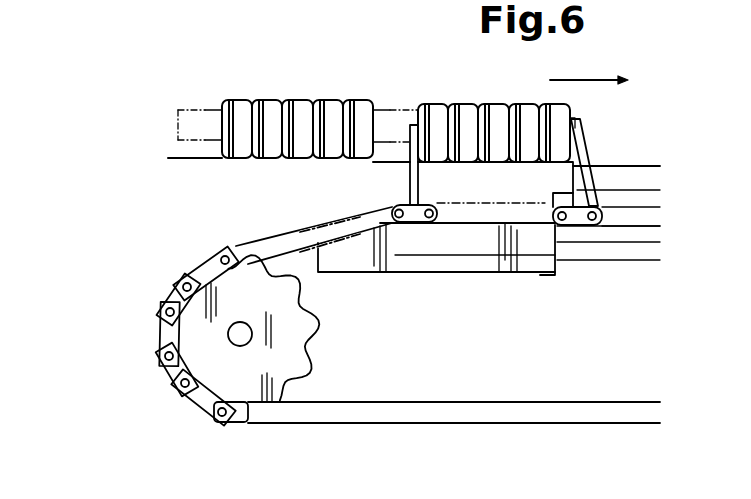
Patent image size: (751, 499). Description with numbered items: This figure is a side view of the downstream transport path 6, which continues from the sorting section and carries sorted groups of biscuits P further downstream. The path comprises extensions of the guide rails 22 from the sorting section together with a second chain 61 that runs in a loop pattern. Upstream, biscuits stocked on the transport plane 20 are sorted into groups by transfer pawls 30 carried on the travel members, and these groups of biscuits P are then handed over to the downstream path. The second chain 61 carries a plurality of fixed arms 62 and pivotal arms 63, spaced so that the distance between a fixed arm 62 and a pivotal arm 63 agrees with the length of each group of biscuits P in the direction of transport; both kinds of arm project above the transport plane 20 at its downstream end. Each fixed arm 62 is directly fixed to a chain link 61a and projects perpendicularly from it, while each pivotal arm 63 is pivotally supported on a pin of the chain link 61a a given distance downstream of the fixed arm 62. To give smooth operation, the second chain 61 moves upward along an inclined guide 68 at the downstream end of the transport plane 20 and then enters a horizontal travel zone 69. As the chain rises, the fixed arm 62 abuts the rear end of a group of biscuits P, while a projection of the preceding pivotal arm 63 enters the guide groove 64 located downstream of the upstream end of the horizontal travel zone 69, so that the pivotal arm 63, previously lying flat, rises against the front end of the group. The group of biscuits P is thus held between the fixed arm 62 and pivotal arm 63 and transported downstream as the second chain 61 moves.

The downstream transport path 6 is at (632, 72).
The group of biscuits P is at (222, 94).
The transfer pawl 30 is at (178, 108).
The fixed arm 62 is at (410, 186).
The inclined guide 68 is at (358, 265).
The horizontal travel zone 69 is at (584, 260).
The transport plane 20 is at (645, 164).
The guide rail 22 is at (658, 164).
The guide groove 64 is at (646, 210).
The pivotal arm 63 is at (578, 174).
The chain link 61a is at (586, 182).
The second chain 61 is at (455, 402).